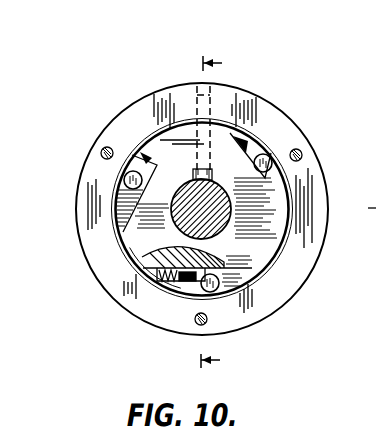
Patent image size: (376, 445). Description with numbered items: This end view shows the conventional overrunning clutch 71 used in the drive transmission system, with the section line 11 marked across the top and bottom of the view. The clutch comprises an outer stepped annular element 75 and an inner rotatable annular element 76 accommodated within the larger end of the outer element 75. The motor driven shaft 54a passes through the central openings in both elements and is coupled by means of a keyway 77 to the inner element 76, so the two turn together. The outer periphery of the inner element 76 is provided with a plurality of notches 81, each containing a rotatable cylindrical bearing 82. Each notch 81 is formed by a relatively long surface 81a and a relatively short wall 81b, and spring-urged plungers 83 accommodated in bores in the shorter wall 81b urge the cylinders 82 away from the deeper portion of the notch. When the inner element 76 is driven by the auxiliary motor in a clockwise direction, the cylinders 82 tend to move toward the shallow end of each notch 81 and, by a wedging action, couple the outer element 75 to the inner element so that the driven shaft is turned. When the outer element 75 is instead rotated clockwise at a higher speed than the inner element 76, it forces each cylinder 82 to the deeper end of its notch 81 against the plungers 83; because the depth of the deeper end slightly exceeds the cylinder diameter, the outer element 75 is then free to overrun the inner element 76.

The section line 11- 11 is at (226, 210).
The overrunning clutch 71 is at (257, 90).
The outer stepped annular element 75 is at (276, 118).
The inner rotatable annular element 76 is at (258, 247).
The keyway 77 is at (359, 212).
The notch 81 is at (230, 145).
The relatively long surface 81a is at (119, 224).
The relatively short wall 81b is at (131, 154).
The rotatable cylindrical bearing 82 is at (125, 182).
The spring-urged plunger 83 is at (161, 288).
The motor driven shaft 54a is at (176, 219).